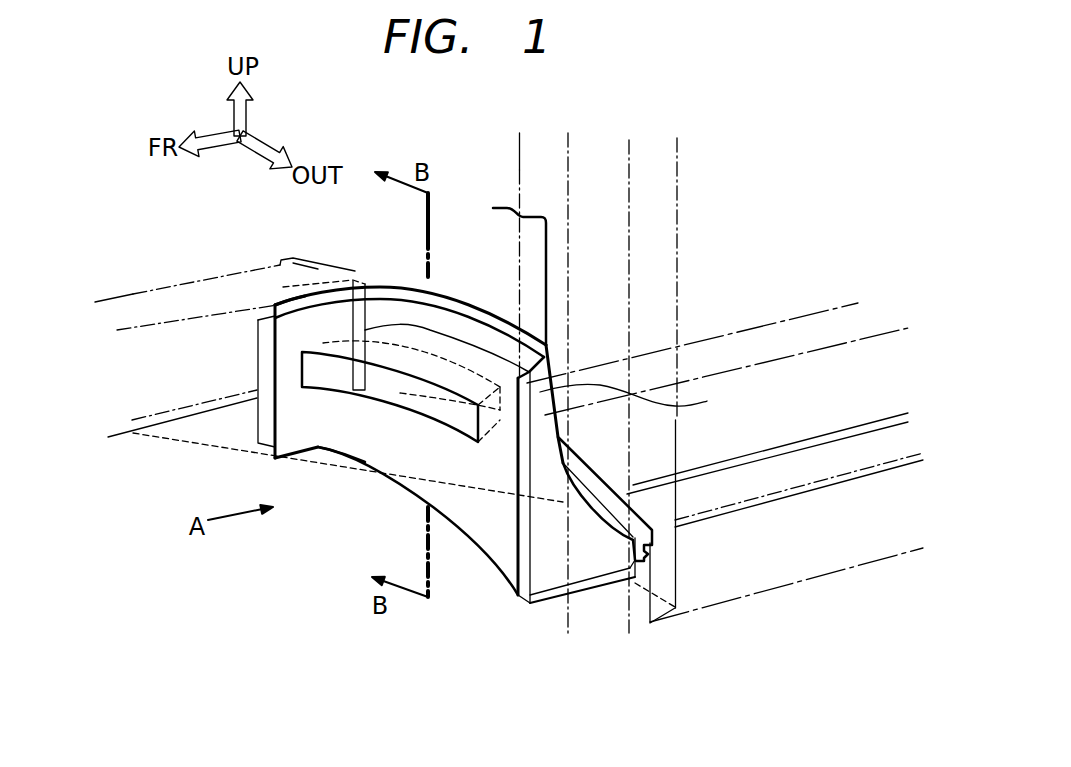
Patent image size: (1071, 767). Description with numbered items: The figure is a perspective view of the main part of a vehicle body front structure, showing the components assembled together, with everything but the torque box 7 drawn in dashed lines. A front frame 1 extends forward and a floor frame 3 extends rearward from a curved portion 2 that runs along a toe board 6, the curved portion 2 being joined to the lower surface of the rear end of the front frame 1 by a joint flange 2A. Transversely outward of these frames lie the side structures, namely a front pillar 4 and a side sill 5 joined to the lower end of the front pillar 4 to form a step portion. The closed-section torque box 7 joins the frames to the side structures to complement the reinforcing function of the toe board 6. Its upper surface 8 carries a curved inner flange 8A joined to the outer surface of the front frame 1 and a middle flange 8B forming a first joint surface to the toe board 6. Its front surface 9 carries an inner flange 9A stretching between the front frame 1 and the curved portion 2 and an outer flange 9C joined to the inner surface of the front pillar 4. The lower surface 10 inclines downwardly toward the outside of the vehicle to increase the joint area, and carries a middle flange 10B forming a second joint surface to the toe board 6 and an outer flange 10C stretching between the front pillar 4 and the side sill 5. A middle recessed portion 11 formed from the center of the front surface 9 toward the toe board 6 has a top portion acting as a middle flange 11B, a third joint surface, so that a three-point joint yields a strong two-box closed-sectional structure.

The front frame 1 is at (205, 330).
The curved portion 2 is at (233, 433).
The joint flange 2A is at (195, 412).
The floor frame 3 is at (790, 332).
The front pillar 4 is at (662, 213).
The side sill 5 is at (777, 570).
The toe board 6 is at (705, 402).
The torque box 7 is at (343, 463).
The upper surface 8 is at (400, 305).
The inner flange 8A is at (290, 308).
The middle flange 8B is at (443, 298).
The front surface 9 is at (427, 460).
The inner flange 9A is at (264, 365).
The outer flange 9C is at (523, 540).
The lower surface 10 is at (590, 567).
The middle flange 10B is at (600, 478).
The outer flange 10C is at (547, 597).
The middle recessed portion 11 is at (338, 372).
The middle flange 11B is at (433, 348).